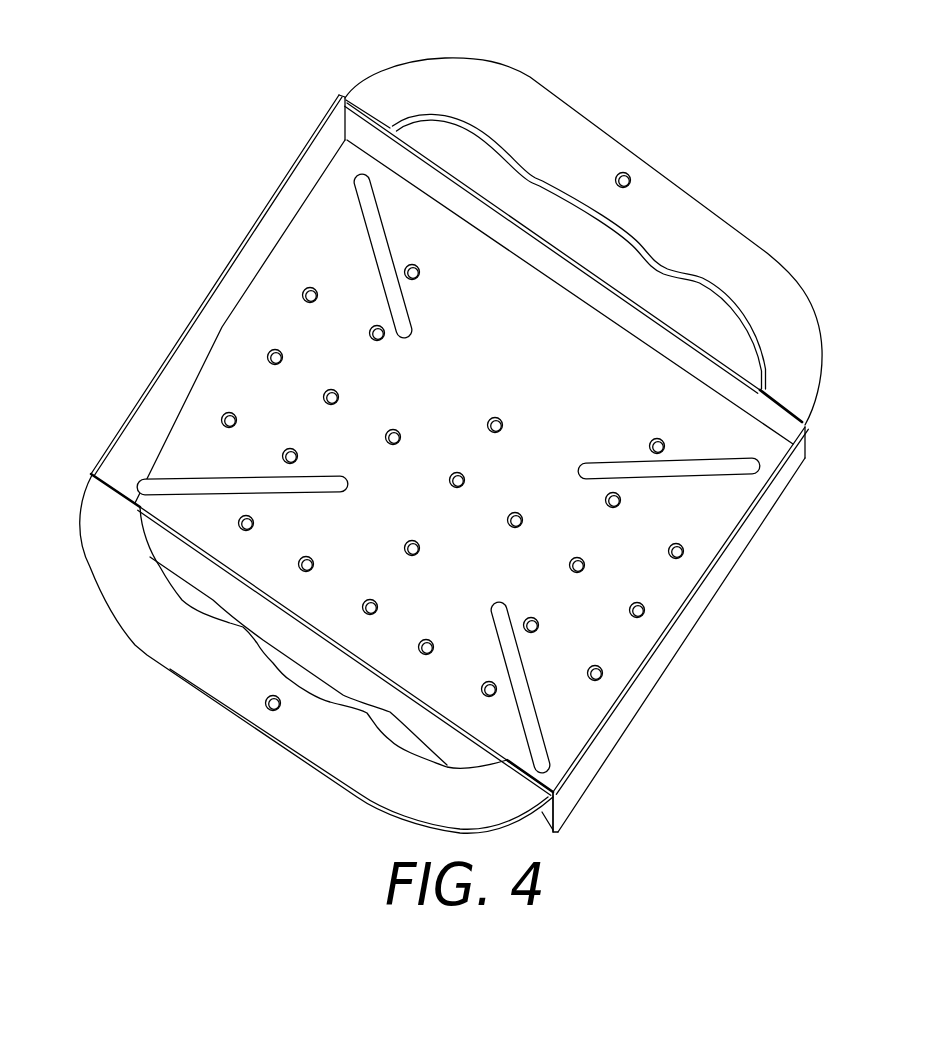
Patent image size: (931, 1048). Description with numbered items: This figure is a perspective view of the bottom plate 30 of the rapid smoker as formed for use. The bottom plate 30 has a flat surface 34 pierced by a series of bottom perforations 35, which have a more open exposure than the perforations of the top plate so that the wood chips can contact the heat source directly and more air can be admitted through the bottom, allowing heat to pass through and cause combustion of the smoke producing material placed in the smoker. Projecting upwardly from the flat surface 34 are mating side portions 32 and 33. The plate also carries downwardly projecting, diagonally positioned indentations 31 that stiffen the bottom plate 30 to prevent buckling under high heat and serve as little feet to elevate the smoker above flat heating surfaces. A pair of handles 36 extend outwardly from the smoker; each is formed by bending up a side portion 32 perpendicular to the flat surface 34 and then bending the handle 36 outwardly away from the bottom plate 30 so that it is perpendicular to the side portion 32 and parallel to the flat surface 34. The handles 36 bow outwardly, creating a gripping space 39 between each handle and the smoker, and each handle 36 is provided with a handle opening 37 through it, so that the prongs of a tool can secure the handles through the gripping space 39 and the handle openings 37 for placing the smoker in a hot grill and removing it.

The bottom plate 30 is at (295, 160).
The indentations 31 is at (681, 478).
The side portion 32 is at (562, 817).
The side portion 33 is at (806, 441).
The flat surface 34 is at (313, 248).
The bottom perforations 35 is at (448, 473).
The handles 36 is at (442, 60).
The handle opening 37 is at (632, 187).
The gripping space 39 is at (693, 307).